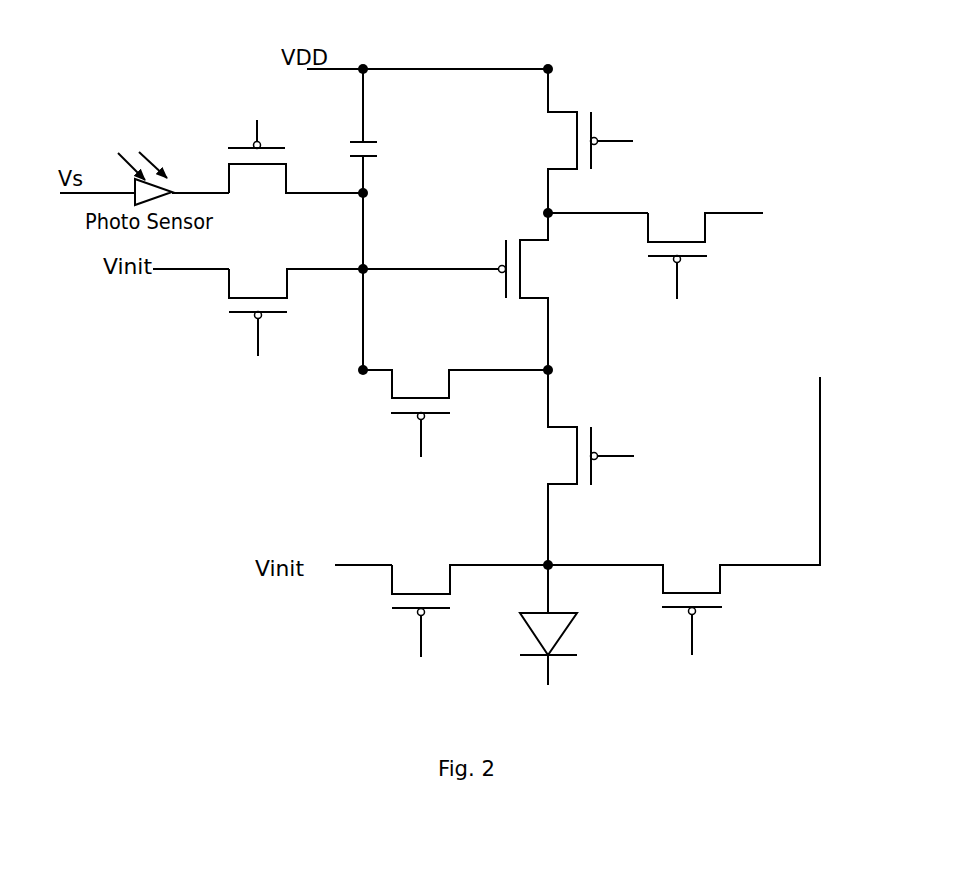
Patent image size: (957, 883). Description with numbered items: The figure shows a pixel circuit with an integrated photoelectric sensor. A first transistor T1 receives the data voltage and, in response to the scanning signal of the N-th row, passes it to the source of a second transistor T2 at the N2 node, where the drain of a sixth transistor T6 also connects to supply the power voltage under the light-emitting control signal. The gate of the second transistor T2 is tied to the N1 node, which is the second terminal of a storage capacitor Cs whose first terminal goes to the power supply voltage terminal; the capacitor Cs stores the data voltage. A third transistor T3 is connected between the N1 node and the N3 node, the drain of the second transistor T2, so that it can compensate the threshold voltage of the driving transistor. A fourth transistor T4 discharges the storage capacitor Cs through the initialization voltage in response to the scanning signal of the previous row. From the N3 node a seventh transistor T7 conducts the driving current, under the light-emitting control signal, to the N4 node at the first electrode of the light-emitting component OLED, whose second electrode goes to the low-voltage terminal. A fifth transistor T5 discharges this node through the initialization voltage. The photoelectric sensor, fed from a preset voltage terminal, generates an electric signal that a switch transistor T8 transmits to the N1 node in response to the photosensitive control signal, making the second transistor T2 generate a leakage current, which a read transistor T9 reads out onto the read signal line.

The first transistor T1 is at (742, 266).
The second transistor T2 is at (475, 291).
The third transistor T3 is at (453, 419).
The fourth transistor T4 is at (293, 320).
The fifth transistor T5 is at (461, 615).
The sixth transistor T6 is at (605, 141).
The seventh transistor T7 is at (603, 467).
The switch transistor T8 is at (294, 159).
The read transistor T9 is at (708, 518).
The storage capacitor Cs is at (344, 169).
The N1 node N1 is at (380, 308).
The N2 node N2 is at (580, 211).
The N3 node N3 is at (566, 373).
The fourth node N4 is at (536, 552).
The light-emitting component OLED is at (585, 643).